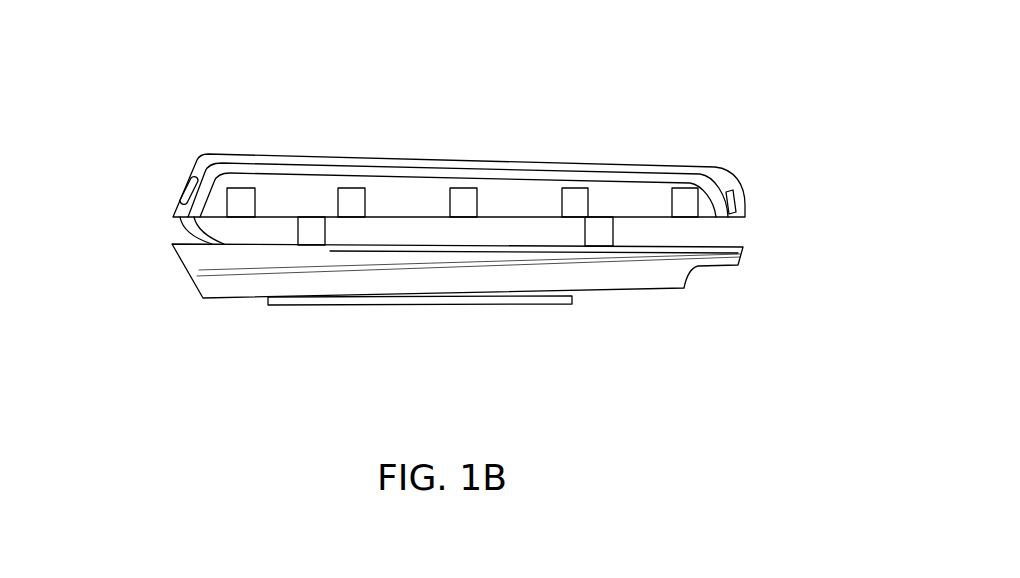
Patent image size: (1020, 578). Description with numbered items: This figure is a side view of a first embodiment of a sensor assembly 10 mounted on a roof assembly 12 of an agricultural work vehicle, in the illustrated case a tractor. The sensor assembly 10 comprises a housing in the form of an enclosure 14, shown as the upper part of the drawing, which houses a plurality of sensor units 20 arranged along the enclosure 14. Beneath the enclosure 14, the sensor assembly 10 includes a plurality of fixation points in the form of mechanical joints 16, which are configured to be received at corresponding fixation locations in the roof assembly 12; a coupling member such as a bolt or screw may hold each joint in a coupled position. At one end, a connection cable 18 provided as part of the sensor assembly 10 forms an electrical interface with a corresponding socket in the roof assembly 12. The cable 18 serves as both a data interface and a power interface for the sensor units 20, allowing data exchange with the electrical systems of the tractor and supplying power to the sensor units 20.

The sensor assembly 10 is at (680, 153).
The roof assembly 12 is at (688, 290).
The enclosure 14 is at (735, 172).
The mechanical joints 16 is at (313, 235).
The connection cable 18 is at (178, 224).
The sensor units 20 is at (348, 187).